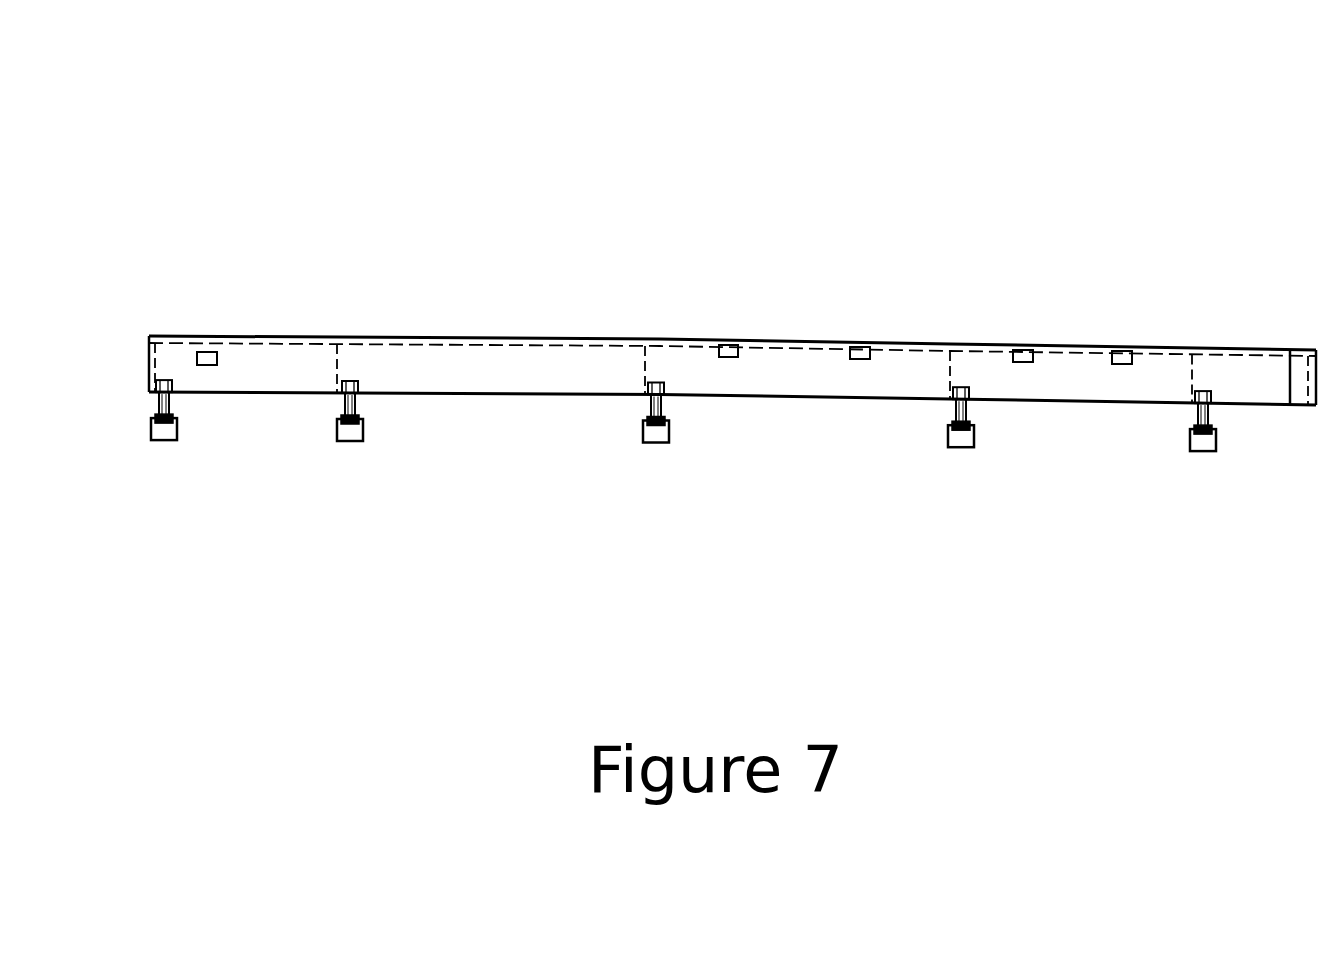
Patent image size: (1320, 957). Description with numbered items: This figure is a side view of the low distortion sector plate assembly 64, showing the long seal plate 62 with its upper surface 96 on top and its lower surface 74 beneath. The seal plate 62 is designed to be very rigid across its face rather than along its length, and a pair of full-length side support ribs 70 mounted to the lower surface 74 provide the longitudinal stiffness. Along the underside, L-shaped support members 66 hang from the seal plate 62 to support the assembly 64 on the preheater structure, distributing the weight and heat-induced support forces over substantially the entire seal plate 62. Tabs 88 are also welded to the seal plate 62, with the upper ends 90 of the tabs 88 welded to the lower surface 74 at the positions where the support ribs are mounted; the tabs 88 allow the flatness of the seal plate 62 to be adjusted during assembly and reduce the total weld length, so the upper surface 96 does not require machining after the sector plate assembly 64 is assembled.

The sector plate assembly 64 is at (498, 84).
The seal plate 62 is at (520, 338).
The side support ribs 70 is at (294, 380).
The lower surface 74 is at (443, 346).
The upper surface 96 is at (968, 343).
The tabs 88 is at (645, 345).
The upper ends 90 is at (650, 340).
The L-shaped support members 66 is at (352, 441).